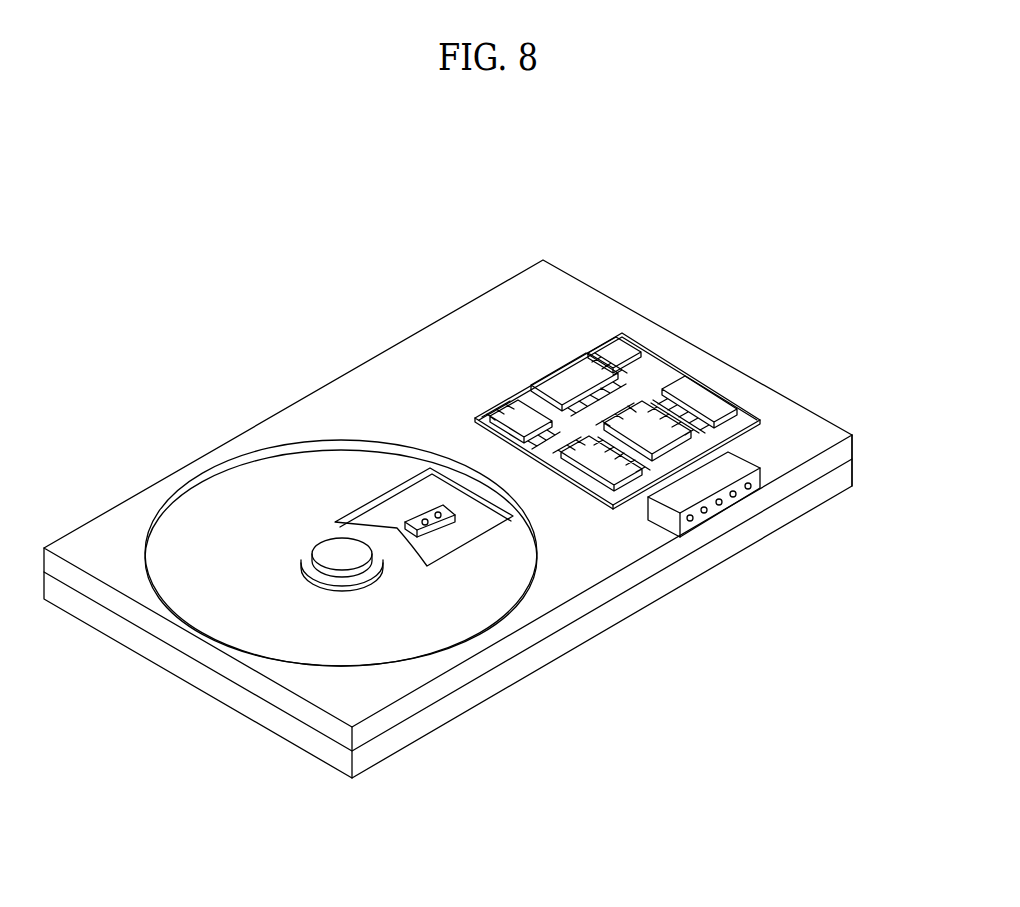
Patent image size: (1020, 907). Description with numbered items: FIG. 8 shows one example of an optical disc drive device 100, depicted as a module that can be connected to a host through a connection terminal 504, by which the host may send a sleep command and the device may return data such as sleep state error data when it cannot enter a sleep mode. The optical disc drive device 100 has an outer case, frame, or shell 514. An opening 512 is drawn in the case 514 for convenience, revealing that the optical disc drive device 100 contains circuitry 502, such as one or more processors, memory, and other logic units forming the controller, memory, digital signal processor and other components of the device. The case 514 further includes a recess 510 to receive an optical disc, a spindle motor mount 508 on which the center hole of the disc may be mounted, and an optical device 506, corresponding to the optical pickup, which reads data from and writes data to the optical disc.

The optical disc drive device 100 is at (496, 250).
The circuitry 502 is at (716, 389).
The connection terminal 504 is at (705, 513).
The optical device 506 is at (418, 517).
The spindle motor mount 508 is at (325, 557).
The recess 510 is at (193, 507).
The opening 512 is at (626, 386).
The case 514 is at (845, 481).